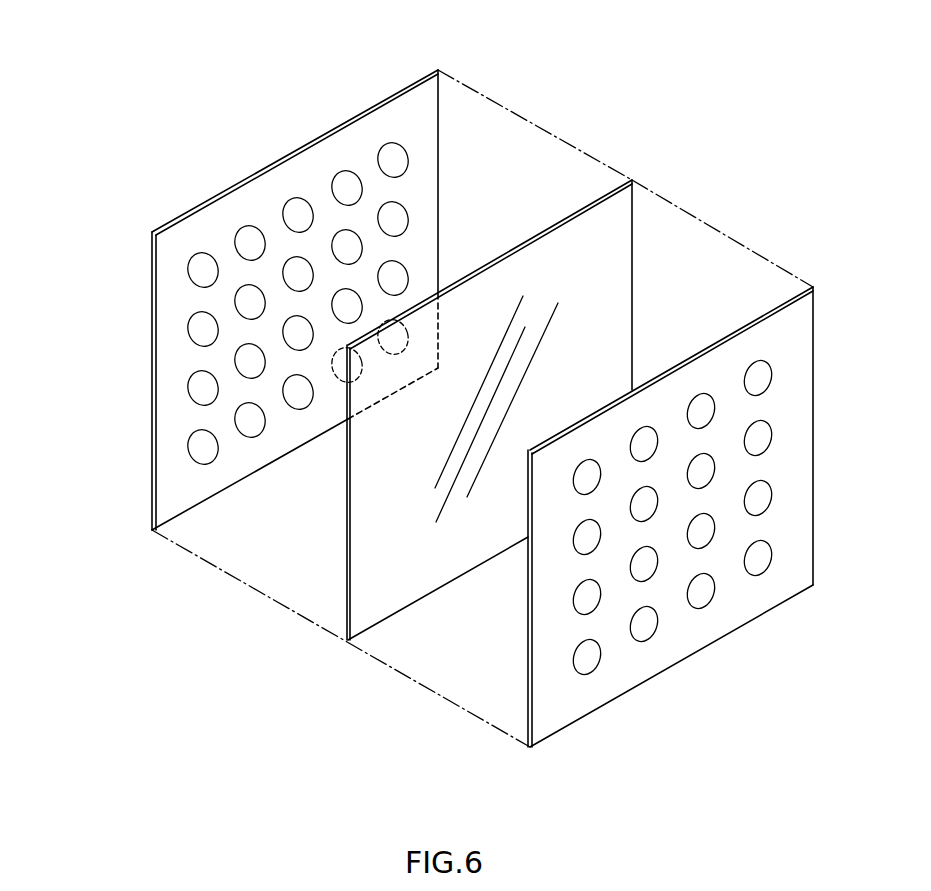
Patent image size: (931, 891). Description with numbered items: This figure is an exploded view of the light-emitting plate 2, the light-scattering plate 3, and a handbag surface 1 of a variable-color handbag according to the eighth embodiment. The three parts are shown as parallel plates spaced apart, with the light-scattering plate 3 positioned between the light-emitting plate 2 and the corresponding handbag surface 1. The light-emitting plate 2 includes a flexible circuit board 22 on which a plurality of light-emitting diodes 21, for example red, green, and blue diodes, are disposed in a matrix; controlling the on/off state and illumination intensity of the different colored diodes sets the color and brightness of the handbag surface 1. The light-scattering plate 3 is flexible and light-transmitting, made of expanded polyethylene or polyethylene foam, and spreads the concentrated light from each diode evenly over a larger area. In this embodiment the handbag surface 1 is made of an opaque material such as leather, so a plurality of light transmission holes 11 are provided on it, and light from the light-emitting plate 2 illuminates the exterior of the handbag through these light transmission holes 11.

The handbag surface 1 is at (670, 534).
The light transmission holes 11 is at (646, 636).
The light-emitting plate 2 is at (248, 300).
The light-emitting diodes 21 is at (252, 230).
The flexible circuit board 22 is at (178, 440).
The light-scattering plate 3 is at (407, 615).